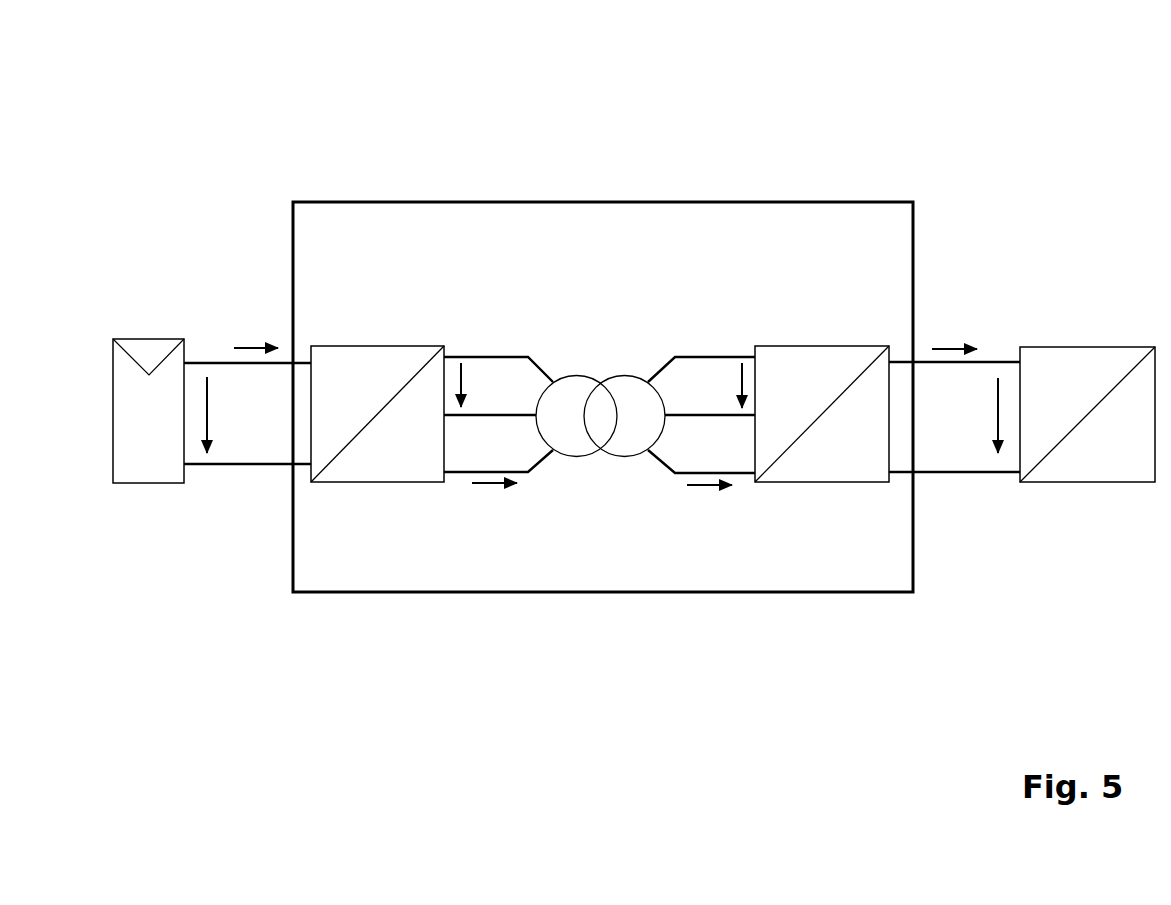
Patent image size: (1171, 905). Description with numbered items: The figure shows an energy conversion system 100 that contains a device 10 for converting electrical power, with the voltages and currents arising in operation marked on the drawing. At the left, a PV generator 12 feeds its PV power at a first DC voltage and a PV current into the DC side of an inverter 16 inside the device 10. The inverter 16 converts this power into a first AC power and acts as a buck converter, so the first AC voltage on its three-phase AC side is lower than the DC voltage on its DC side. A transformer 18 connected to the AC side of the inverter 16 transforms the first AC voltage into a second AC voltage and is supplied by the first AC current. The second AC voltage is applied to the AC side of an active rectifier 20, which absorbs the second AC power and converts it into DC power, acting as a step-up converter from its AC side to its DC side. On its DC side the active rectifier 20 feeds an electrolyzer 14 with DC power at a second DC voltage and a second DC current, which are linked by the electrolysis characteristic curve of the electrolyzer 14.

The energy conversion system 100 is at (953, 163).
The device for converting electrical power 10 is at (880, 253).
The PV generator 12 is at (113, 378).
The electrolyzer 14 is at (1093, 343).
The inverter 16 is at (383, 343).
The transformer 18 is at (600, 382).
The active rectifier 20 is at (828, 343).